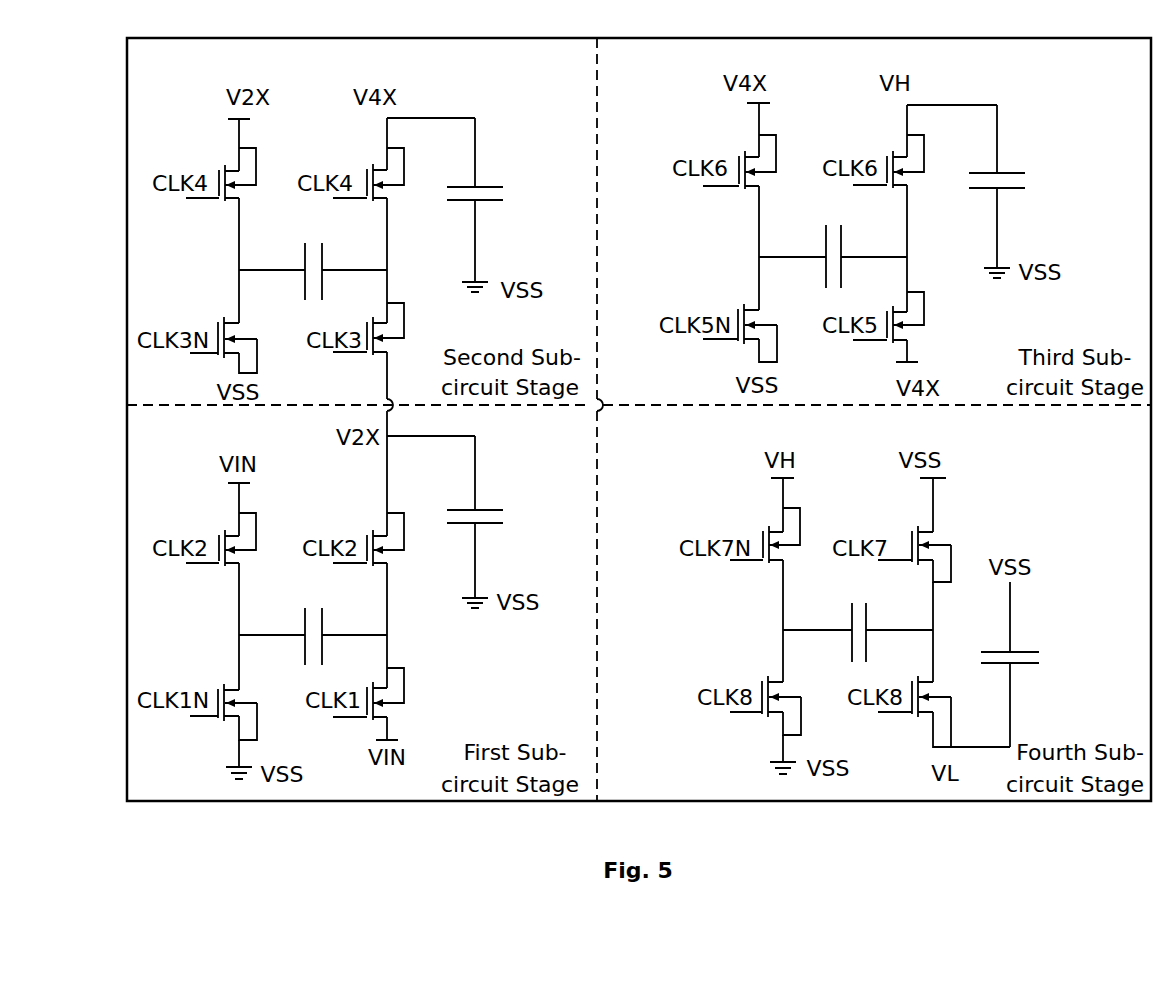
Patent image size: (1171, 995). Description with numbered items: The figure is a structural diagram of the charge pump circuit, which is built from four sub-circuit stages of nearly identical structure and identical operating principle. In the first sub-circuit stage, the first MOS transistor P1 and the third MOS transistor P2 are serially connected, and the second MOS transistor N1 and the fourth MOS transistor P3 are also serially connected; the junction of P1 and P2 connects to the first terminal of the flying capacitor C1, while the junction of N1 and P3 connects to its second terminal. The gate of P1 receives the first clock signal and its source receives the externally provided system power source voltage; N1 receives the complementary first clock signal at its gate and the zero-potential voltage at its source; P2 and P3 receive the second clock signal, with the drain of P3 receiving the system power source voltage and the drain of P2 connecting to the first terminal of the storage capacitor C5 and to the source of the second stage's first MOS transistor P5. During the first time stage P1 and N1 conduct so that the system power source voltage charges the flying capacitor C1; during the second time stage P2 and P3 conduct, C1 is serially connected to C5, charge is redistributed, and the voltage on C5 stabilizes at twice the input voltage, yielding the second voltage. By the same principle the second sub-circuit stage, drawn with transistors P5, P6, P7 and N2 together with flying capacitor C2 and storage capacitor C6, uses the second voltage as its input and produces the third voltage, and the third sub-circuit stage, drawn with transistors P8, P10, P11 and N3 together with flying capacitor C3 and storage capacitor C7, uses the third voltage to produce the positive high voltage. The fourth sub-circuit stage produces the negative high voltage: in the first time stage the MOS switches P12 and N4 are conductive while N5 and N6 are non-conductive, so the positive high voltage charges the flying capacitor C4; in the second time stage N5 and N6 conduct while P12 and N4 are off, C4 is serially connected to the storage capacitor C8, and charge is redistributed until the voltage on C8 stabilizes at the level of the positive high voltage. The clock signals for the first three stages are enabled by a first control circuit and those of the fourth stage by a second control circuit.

The first MOS transistor P1 is at (368, 681).
The third MOS transistor P2 is at (368, 525).
The fourth MOS transistor P3 is at (221, 525).
The first MOS transistor of the second sub-circuit stage P5 is at (368, 316).
The MOS transistor P6 is at (368, 163).
The MOS transistor P7 is at (221, 163).
The MOS transistor P8 is at (888, 304).
The MOS transistor P10 is at (738, 149).
The MOS transistor P11 is at (888, 149).
The MOS switch P12 is at (759, 524).
The MOS switch N4 is at (914, 533).
The second MOS transistor N1 is at (256, 651).
The MOS transistor N2 is at (256, 284).
The MOS transistor N3 is at (773, 272).
The MOS switch N5 is at (798, 646).
The MOS switch N6 is at (899, 646).
The flying capacitor C1 is at (313, 625).
The flying capacitor C2 is at (313, 260).
The flying capacitor C3 is at (834, 243).
The flying capacitor C4 is at (854, 617).
The storage capacitor C5 is at (495, 510).
The storage capacitor C6 is at (495, 196).
The storage capacitor C7 is at (1015, 180).
The storage capacitor C8 is at (1028, 657).